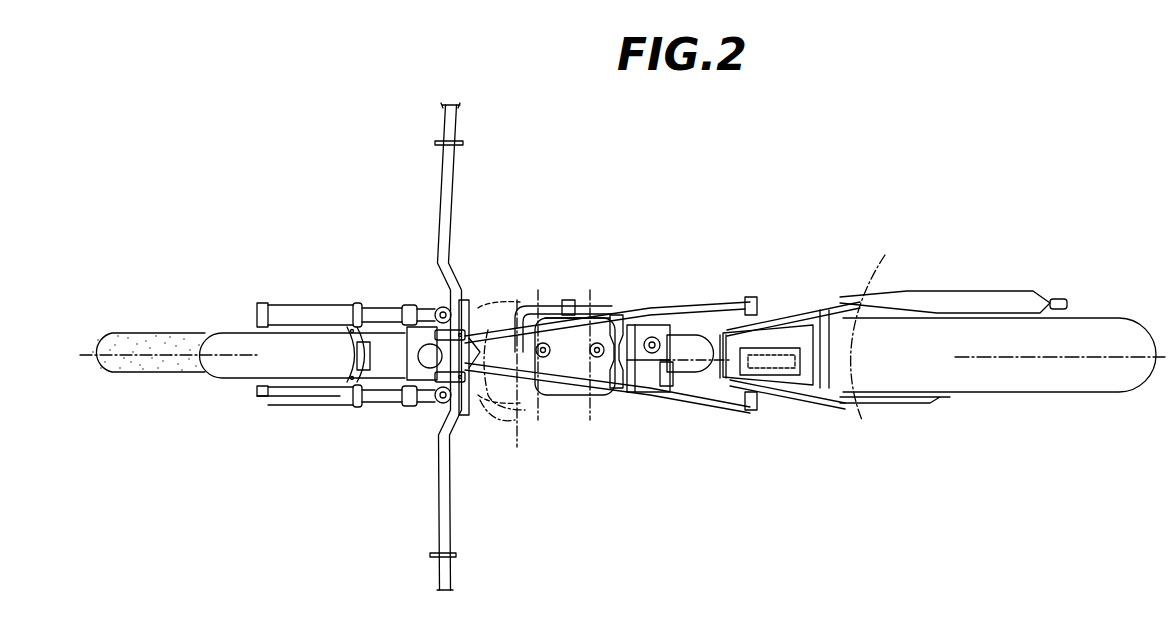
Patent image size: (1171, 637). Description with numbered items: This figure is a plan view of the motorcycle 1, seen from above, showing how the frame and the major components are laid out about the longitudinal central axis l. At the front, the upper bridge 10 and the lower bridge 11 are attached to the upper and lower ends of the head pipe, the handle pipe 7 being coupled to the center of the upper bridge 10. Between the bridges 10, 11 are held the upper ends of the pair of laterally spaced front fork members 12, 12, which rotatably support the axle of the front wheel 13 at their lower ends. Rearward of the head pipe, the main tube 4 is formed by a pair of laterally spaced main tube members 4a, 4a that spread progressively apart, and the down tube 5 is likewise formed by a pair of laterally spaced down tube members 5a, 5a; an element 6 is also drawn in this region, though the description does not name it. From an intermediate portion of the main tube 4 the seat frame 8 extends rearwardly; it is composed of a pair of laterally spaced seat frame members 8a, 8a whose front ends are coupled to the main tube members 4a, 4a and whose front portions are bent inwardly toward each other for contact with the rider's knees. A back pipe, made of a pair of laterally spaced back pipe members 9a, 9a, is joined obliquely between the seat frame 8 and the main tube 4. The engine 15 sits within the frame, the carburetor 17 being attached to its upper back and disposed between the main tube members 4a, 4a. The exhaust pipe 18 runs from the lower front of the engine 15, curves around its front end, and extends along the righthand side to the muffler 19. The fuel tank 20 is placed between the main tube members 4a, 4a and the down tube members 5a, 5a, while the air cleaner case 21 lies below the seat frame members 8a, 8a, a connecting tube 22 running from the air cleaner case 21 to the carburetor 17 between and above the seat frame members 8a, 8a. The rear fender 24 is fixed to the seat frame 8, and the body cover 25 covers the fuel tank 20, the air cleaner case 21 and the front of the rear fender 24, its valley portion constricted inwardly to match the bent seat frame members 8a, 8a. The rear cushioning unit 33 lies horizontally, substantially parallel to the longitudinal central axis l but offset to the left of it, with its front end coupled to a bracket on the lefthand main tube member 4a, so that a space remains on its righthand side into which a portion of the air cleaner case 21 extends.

The motorcycle 1 is at (675, 217).
The main tube 4 is at (605, 300).
The main tube member 4a is at (583, 300).
The down tube 5 is at (485, 305).
The down tube member 5a is at (505, 300).
The bracket 6 is at (632, 298).
The handle pipe 7 is at (445, 208).
The seat frame 8 is at (792, 313).
The seat frame member 8a is at (762, 313).
The back pipe member 9a is at (772, 313).
The upper bridge 10 is at (430, 385).
The lower bridge 11 is at (405, 352).
The front fork member 12 is at (310, 308).
The front wheel 13 is at (133, 366).
The engine 15 is at (590, 400).
The carburetor 17 is at (662, 300).
The exhaust pipe 18 is at (545, 300).
The muffler 19 is at (995, 297).
The fuel tank 20 is at (520, 386).
The air cleaner case 21 is at (795, 375).
The connecting tube 22 is at (692, 335).
The rear fender 24 is at (1033, 395).
The body cover 25 is at (880, 326).
The rear cushioning unit 33 is at (668, 392).
The longitudinal central axis l is at (1115, 357).